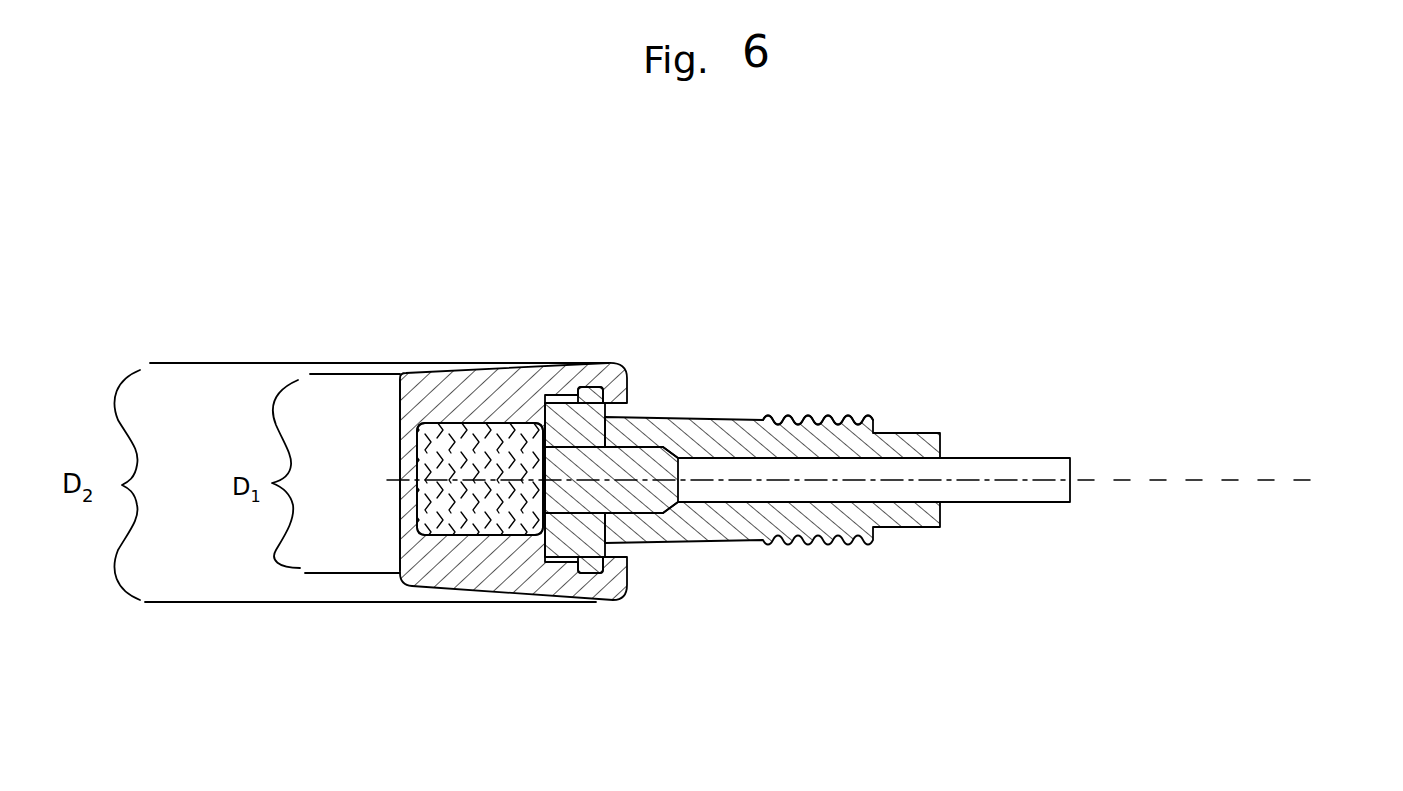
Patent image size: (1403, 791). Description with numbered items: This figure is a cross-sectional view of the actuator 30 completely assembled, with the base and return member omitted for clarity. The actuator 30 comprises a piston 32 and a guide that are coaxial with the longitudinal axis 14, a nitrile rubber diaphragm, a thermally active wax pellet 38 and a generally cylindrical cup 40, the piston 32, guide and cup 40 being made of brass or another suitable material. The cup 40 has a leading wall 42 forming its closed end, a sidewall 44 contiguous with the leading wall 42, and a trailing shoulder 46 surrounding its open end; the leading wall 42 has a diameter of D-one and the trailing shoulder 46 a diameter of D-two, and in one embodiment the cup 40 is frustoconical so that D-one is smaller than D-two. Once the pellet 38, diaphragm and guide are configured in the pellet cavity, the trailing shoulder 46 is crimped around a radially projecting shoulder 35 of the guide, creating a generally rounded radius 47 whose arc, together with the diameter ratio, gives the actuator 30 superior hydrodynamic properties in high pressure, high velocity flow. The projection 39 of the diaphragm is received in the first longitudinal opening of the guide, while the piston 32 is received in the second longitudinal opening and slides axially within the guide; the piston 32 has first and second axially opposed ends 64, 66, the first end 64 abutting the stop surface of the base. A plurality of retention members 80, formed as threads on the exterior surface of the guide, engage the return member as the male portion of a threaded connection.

The longitudinal axis 14 is at (1300, 480).
The actuator 30 is at (772, 455).
The piston 32 is at (980, 500).
The radially projecting shoulder 35 is at (590, 570).
The thermally active wax pellet 38 is at (477, 457).
The projection 39 is at (650, 503).
The generally cylindrical cup 40 is at (404, 350).
The leading wall 42 is at (397, 505).
The sidewall 44 is at (483, 593).
The trailing shoulder 46 is at (627, 408).
The generally rounded radius 47 is at (612, 372).
The first piston end 64 is at (680, 472).
The second piston end 66 is at (1073, 468).
The retention members 80 is at (852, 542).